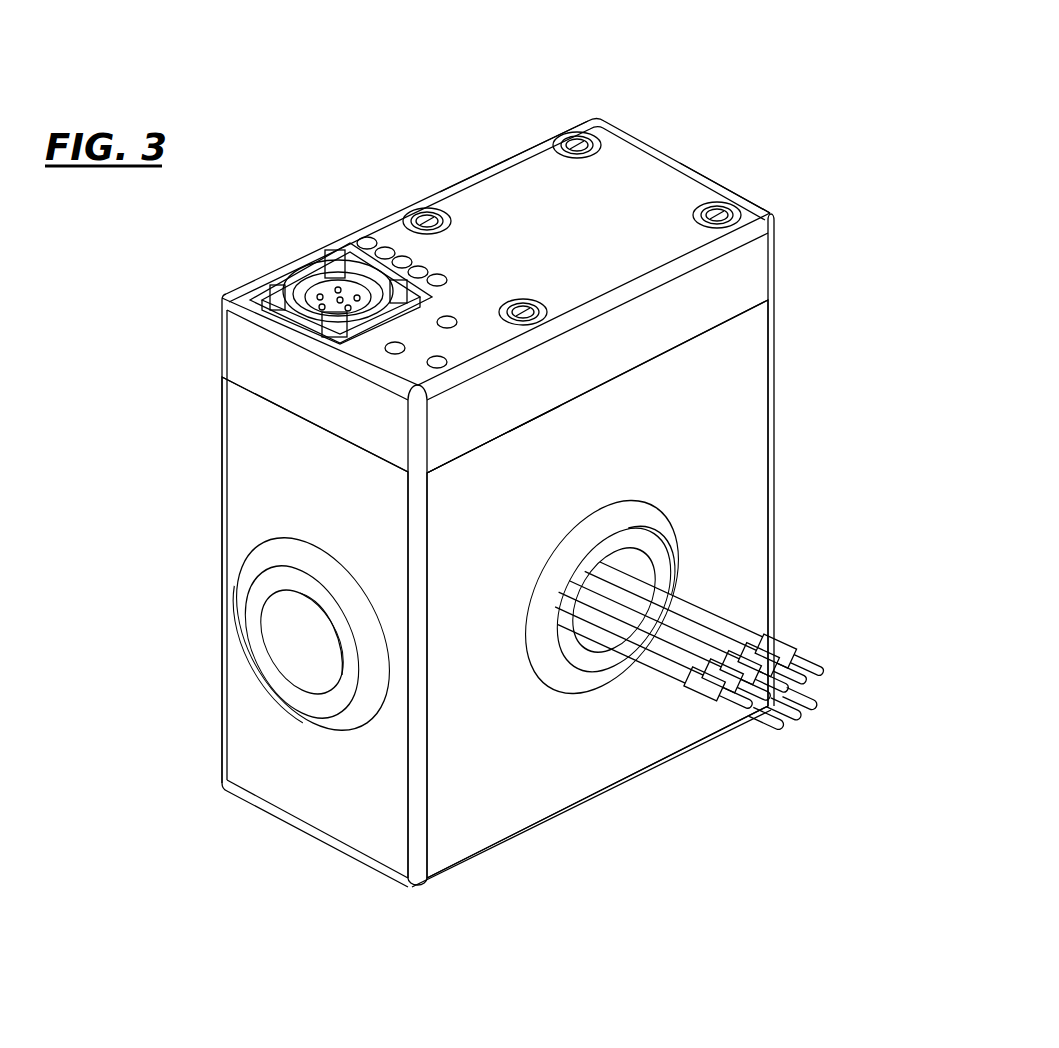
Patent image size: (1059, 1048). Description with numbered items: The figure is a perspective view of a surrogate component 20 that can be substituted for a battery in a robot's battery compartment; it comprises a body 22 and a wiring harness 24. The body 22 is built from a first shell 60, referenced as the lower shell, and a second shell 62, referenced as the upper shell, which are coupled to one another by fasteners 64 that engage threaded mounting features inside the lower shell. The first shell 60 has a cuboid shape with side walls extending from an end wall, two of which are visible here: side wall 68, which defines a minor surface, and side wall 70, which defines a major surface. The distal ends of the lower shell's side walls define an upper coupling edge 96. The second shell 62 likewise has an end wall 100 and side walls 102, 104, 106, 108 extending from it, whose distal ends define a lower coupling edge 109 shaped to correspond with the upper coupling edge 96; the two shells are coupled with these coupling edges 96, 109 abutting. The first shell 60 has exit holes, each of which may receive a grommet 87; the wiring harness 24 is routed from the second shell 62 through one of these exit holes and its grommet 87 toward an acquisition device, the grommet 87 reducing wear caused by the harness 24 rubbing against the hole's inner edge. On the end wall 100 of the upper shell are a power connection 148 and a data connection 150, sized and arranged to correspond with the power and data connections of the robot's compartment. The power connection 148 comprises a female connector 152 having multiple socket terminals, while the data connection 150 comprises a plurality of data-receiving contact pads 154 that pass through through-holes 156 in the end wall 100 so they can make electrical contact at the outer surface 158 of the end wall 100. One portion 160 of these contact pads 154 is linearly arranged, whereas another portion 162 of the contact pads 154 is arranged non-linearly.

The surrogate component 20 is at (772, 97).
The body 22 is at (787, 366).
The wiring harness 24 is at (733, 600).
The first shell 60 is at (788, 431).
The second shell 62 is at (788, 256).
The fasteners 64 is at (575, 140).
The side wall 68 is at (250, 453).
The side wall 70 is at (473, 800).
The grommet 87 is at (330, 570).
The upper coupling edge 96 is at (514, 428).
The end wall 100 is at (612, 207).
The side wall 102 is at (247, 353).
The side wall 104 is at (650, 340).
The side wall 106 is at (740, 213).
The side wall 108 is at (503, 168).
The lower coupling edge 109 is at (480, 447).
The power connection 148 is at (293, 253).
The data connection 150 is at (336, 224).
The female connector 152 is at (327, 290).
The data-receiving contact pads 154 is at (440, 282).
The through-holes 156 is at (450, 318).
The outer surface 158 is at (622, 187).
The portion of contact pads 160 is at (376, 227).
The portion of contact pads 162 is at (467, 349).